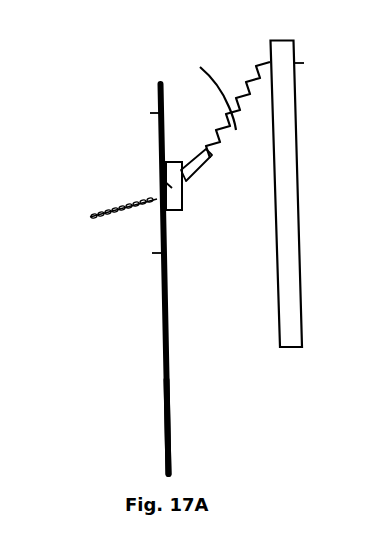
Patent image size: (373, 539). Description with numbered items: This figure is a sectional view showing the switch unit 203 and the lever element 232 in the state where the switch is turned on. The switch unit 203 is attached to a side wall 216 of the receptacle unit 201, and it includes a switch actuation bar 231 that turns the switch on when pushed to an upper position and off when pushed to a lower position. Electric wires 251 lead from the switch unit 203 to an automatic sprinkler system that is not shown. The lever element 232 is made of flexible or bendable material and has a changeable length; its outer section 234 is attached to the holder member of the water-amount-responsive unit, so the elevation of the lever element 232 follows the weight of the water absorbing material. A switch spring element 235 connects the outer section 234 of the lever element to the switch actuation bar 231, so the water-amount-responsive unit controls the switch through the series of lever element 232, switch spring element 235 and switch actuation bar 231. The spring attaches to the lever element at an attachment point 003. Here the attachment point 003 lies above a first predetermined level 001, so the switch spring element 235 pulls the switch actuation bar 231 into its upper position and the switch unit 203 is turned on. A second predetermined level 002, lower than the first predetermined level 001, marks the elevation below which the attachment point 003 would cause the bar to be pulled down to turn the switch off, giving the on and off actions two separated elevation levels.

The receptacle unit 201 is at (166, 352).
The side wall 216 is at (167, 418).
The first predetermined level 001 is at (134, 113).
The second predetermined level 002 is at (138, 253).
The attachment point 003 is at (316, 64).
The lever element 232 is at (288, 118).
The outer section 234 is at (292, 237).
The switch spring element 235 is at (200, 67).
The switch unit 203 is at (166, 184).
The switch actuation bar 231 is at (192, 177).
The electric wires 251 is at (90, 210).